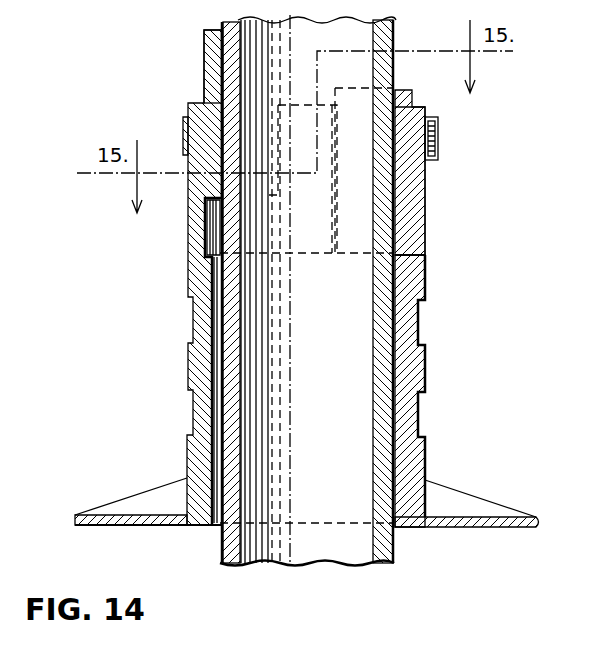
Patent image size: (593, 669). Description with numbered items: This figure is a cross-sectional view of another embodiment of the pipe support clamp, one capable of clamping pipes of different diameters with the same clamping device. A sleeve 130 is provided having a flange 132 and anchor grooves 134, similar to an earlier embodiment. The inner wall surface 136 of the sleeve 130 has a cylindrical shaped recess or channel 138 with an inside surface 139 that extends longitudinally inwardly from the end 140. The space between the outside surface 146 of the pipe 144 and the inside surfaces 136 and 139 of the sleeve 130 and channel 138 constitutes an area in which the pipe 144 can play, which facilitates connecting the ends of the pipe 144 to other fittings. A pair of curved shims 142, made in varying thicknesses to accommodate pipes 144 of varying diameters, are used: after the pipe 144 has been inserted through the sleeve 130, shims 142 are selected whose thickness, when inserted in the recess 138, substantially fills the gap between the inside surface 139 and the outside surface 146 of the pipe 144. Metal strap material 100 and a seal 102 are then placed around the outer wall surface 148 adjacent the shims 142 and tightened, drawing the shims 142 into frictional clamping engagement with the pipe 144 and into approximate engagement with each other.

The metal strap material 100 is at (184, 135).
The seal 102 is at (440, 140).
The sleeve 130 is at (414, 272).
The flange 132 is at (478, 521).
The anchor grooves 134 is at (420, 413).
The inner wall surface 136 is at (212, 527).
The cylindrical shaped recess or channel 138 is at (215, 240).
The inside surface 139 is at (207, 222).
The end 140 is at (190, 103).
The curved shims 142 is at (207, 44).
The pipe 144 is at (398, 563).
The outside surface 146 is at (224, 545).
The outer wall surface 148 is at (426, 230).